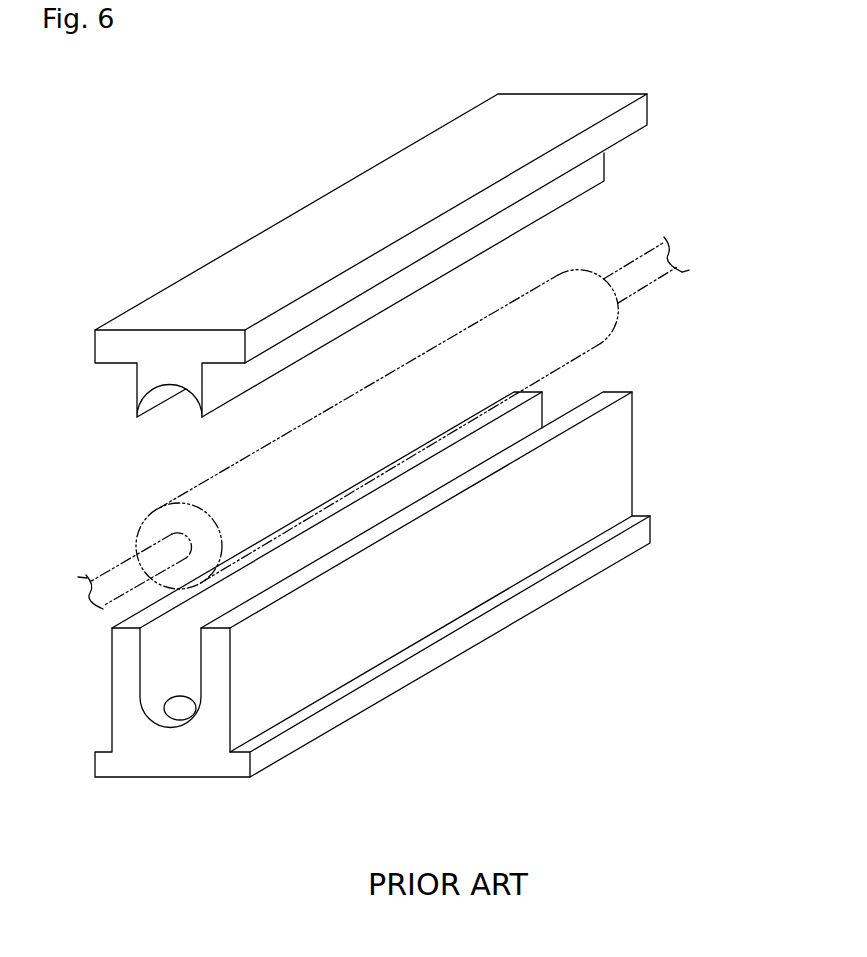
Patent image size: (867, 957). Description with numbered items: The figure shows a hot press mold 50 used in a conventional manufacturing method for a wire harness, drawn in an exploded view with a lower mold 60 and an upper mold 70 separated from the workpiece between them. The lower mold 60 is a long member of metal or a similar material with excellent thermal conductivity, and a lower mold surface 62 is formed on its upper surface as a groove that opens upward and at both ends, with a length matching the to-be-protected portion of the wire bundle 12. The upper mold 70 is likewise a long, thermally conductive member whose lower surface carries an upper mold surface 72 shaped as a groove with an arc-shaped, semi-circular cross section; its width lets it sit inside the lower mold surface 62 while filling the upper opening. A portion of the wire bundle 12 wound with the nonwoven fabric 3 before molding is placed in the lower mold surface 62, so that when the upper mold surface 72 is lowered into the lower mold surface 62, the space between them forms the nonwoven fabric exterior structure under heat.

The hot press mold 50 is at (371, 281).
The upper mold 70 is at (252, 265).
The upper mold surface 72 is at (158, 398).
The lower mold 60 is at (372, 615).
The lower mold surface 62 is at (165, 717).
The nonwoven fabric 3 is at (583, 357).
The wire bundle 12 is at (643, 255).